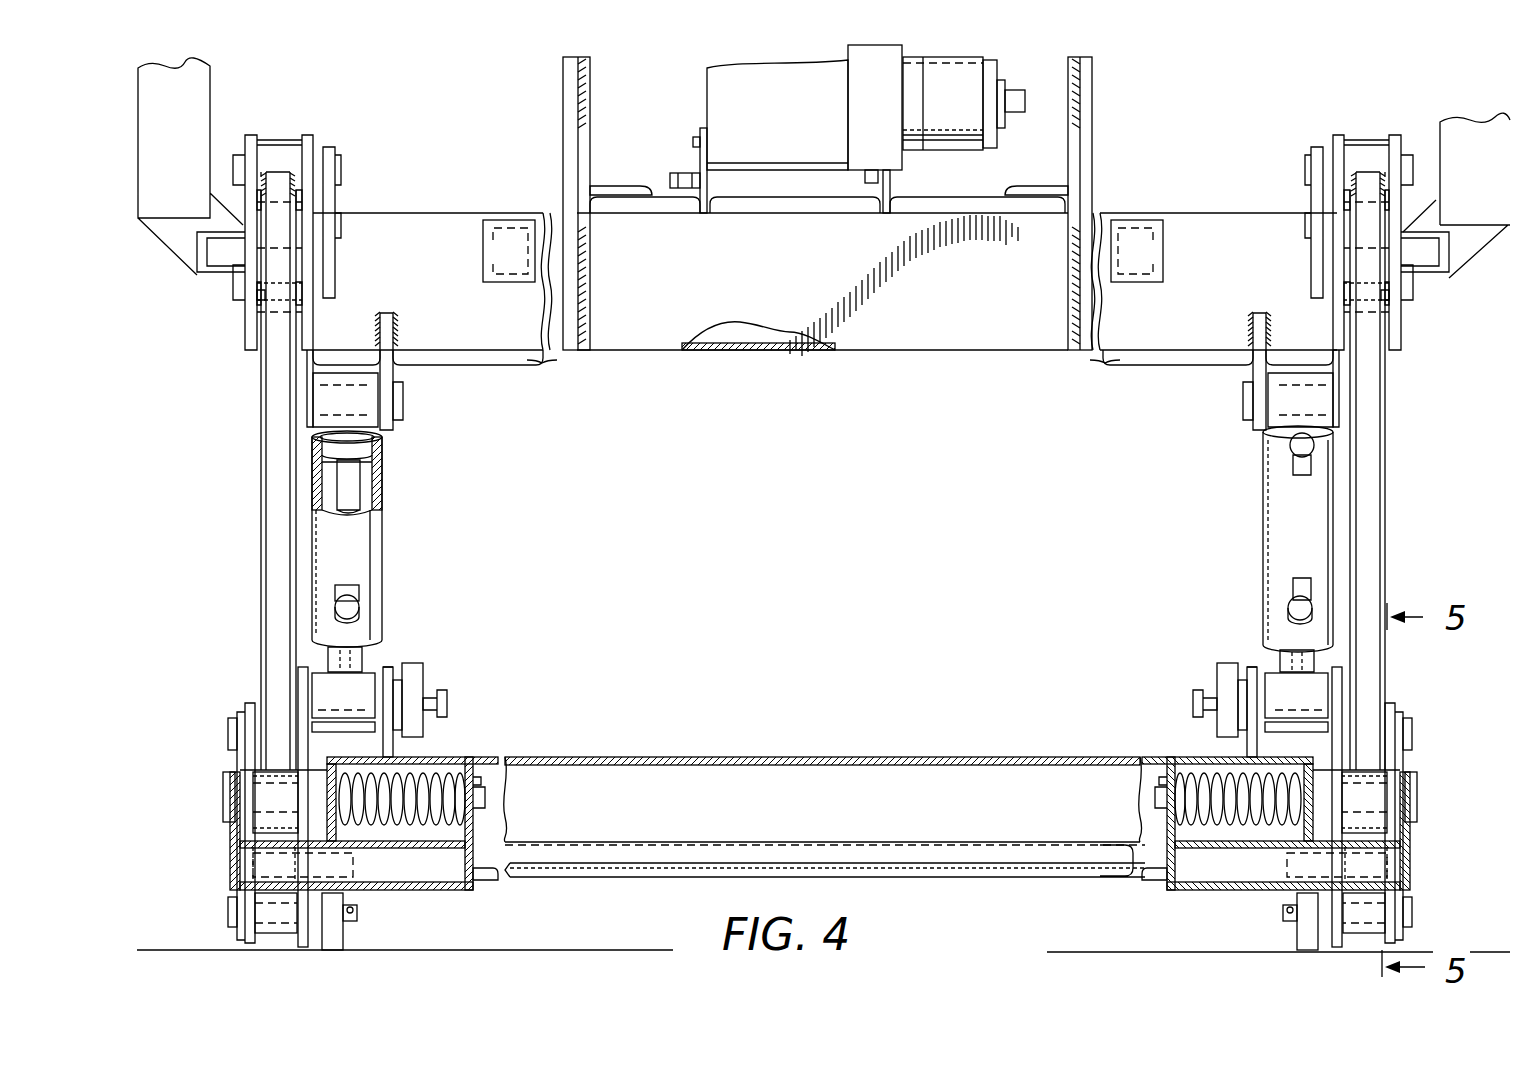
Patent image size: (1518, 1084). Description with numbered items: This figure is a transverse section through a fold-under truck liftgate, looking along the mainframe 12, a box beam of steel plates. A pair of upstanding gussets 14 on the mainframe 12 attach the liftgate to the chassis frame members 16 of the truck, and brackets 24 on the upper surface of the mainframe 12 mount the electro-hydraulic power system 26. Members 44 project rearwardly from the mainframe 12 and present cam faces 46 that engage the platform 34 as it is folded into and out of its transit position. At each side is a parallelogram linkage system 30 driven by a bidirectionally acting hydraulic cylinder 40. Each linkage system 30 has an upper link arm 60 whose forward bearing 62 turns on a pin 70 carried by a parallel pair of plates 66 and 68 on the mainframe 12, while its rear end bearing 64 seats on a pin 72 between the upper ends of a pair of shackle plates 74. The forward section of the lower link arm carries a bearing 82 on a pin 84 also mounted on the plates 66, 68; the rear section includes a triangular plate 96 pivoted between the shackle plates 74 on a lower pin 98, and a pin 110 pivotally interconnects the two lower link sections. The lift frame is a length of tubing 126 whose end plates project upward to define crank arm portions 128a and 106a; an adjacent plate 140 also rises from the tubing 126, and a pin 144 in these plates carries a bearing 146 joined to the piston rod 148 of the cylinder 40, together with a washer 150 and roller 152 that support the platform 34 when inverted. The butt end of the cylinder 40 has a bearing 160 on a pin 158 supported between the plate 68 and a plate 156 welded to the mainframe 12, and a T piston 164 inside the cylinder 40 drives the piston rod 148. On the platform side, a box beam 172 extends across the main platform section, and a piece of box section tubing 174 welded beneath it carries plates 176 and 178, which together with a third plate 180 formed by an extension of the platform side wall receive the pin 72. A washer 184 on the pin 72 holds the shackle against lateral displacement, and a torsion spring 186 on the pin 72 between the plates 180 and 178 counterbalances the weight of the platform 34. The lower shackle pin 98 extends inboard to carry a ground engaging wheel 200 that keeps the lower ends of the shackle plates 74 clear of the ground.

The mainframe 12 is at (458, 213).
The gussets 14 is at (563, 108).
The chassis frame members 16 is at (615, 185).
The brackets 24 is at (892, 205).
The electro-hydraulic power system 26 is at (707, 84).
The parallelogram linkage system 30 is at (257, 492).
The foldable platform 34 is at (773, 755).
The power cylinder 40 is at (378, 592).
The rearwardly projecting members 44 is at (510, 284).
The cam faces 46 is at (490, 255).
The upper link arm 60 is at (262, 437).
The forward bearing 62 is at (278, 140).
The rear end bearing 64 is at (268, 790).
The plate 66 is at (245, 137).
The plate 68 is at (313, 137).
The pin 70 is at (337, 160).
The pin 72 is at (223, 782).
The shackle plates 74 is at (300, 808).
The bearing 82 is at (258, 297).
The pin 84 is at (240, 285).
The plate 96 is at (265, 920).
The pin 98 is at (352, 913).
The crank arm portion 106a is at (305, 683).
The pin 110 is at (228, 730).
The tubing 126 is at (672, 878).
The crank arm portion 128a is at (385, 665).
The plate 140 is at (395, 730).
The pin 144 is at (447, 703).
The bearing 146 is at (820, 702).
The piston rod 148 is at (360, 492).
The washer 150 is at (402, 692).
The roller 152 is at (425, 665).
The plate 156 is at (393, 370).
The pin 158 is at (402, 418).
The bearing 160 is at (370, 405).
The T piston 164 is at (372, 463).
The box beam 172 is at (955, 848).
The box section tubing 174 is at (440, 890).
The plate 176 is at (230, 855).
The plate 178 is at (485, 882).
The plate 180 is at (820, 860).
The washer 184 is at (318, 775).
The torsion spring 186 is at (470, 792).
The ground engaging wheel 200 is at (347, 937).